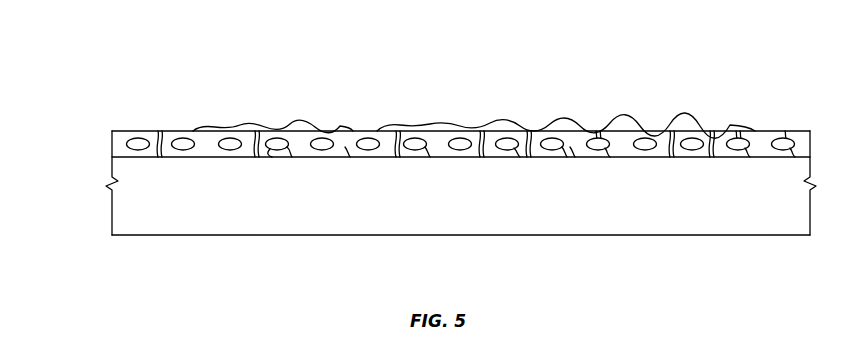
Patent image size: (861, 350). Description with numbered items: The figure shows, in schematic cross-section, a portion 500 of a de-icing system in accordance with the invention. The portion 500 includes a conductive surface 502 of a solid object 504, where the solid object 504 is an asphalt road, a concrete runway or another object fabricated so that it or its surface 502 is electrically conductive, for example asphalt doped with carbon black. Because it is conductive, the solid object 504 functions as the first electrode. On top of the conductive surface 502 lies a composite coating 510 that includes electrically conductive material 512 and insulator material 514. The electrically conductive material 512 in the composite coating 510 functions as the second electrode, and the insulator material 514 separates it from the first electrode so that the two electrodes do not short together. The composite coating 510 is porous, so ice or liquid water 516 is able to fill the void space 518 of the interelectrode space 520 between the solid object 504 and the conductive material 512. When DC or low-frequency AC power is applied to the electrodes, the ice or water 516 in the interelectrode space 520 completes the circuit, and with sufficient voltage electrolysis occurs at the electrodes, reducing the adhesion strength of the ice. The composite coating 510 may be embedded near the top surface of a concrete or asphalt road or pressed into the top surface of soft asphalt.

The portion of a system 500 is at (760, 77).
The conductive surface 502 is at (684, 157).
The solid object 504 is at (482, 216).
The composite coating 510 is at (112, 140).
The electrically conductive material 512 is at (138, 138).
The insulator material 514 is at (166, 140).
The ice or liquid water 516 is at (291, 127).
The void space 518 is at (265, 158).
The interelectrode space 520 is at (353, 158).